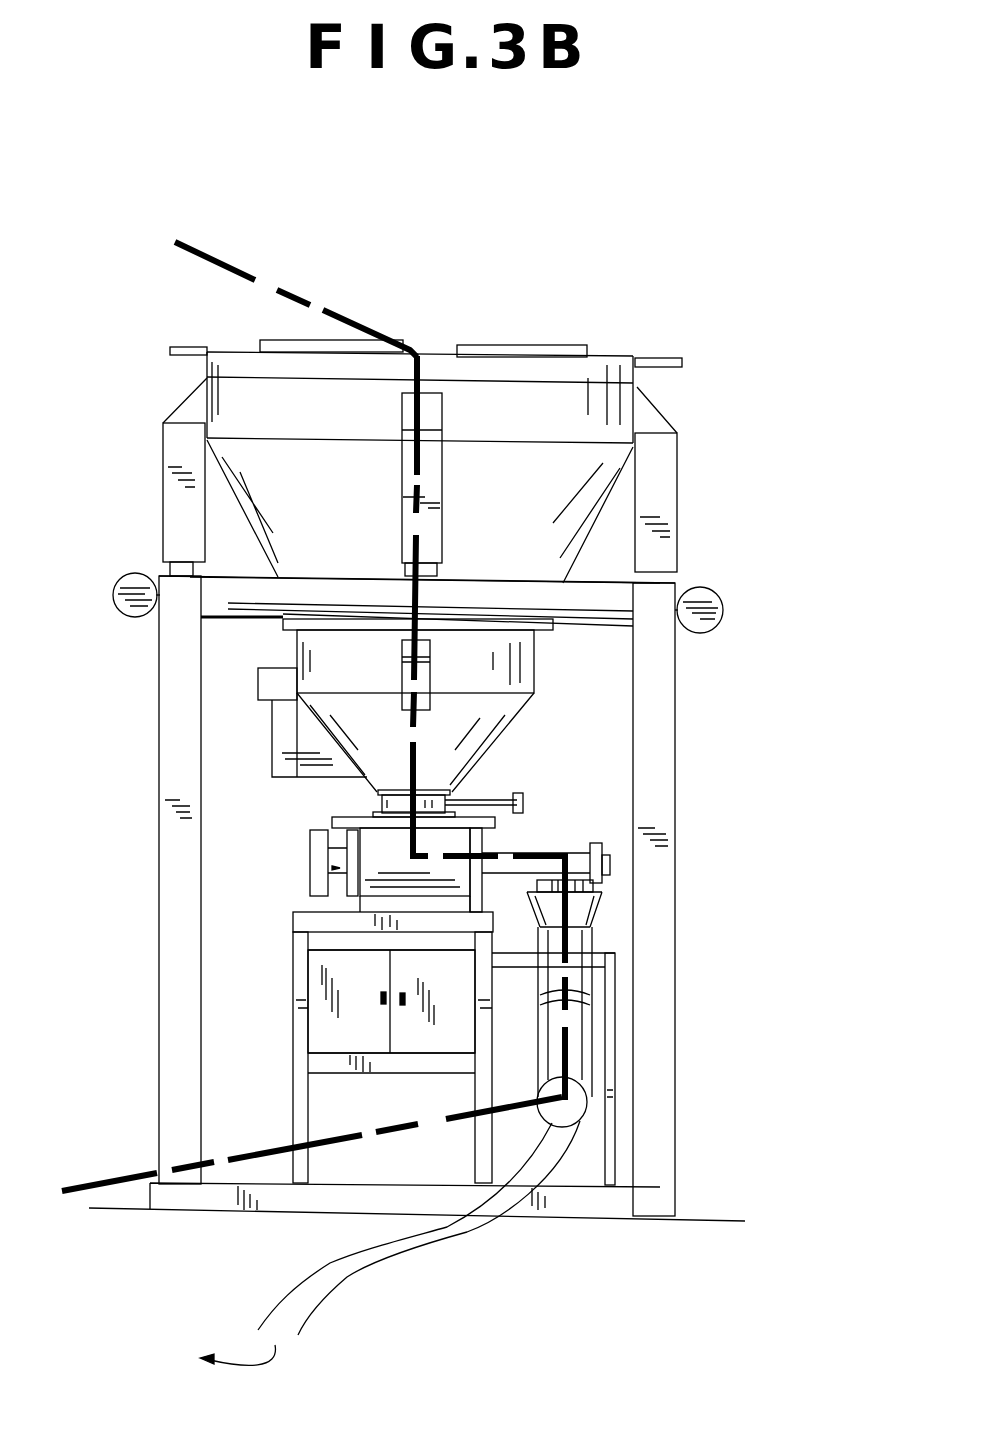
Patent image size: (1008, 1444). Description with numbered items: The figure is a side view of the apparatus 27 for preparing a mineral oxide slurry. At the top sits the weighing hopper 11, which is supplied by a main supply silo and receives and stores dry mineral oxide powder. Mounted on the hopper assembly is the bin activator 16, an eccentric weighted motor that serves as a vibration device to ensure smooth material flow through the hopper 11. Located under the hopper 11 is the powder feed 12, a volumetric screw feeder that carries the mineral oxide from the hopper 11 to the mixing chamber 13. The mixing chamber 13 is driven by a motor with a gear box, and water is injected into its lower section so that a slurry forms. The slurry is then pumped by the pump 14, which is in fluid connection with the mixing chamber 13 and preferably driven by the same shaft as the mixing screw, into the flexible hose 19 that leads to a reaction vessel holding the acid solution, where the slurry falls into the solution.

The weighing hopper 11 is at (547, 342).
The apparatus 27 is at (695, 682).
The bin activator 16 is at (367, 763).
The powder feed 12 is at (492, 841).
The mixing chamber 13 is at (570, 981).
The pump 14 is at (592, 1067).
The flexible hose 19 is at (380, 1262).